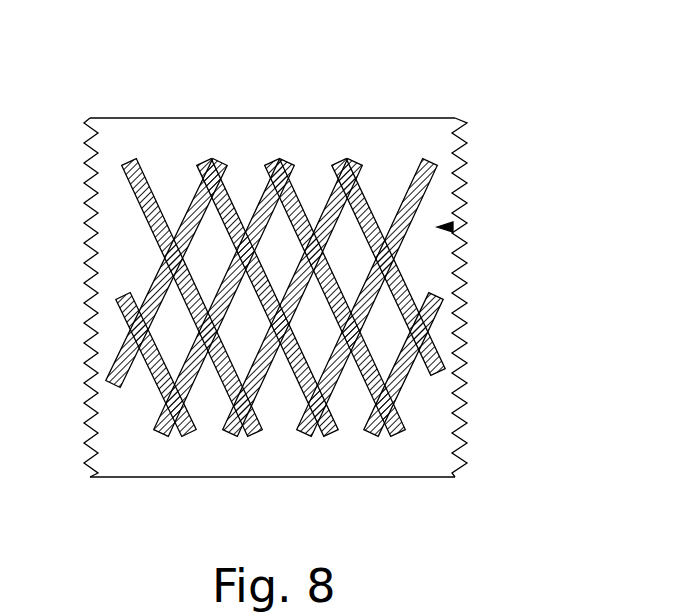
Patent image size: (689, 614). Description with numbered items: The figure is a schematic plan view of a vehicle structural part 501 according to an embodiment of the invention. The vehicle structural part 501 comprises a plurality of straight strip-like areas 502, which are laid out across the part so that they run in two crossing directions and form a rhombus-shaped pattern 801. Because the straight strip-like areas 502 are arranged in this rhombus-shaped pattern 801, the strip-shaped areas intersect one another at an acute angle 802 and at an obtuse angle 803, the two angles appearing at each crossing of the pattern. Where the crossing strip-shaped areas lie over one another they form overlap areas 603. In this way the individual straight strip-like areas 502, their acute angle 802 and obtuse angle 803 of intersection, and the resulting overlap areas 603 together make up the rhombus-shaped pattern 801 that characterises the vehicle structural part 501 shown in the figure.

The vehicle structural part 501 is at (398, 133).
The straight strip-like areas 502 is at (143, 162).
The overlap areas 603 is at (287, 168).
The rhombus-shaped pattern 801 is at (450, 227).
The acute angle 802 is at (333, 356).
The obtuse angle 803 is at (370, 335).